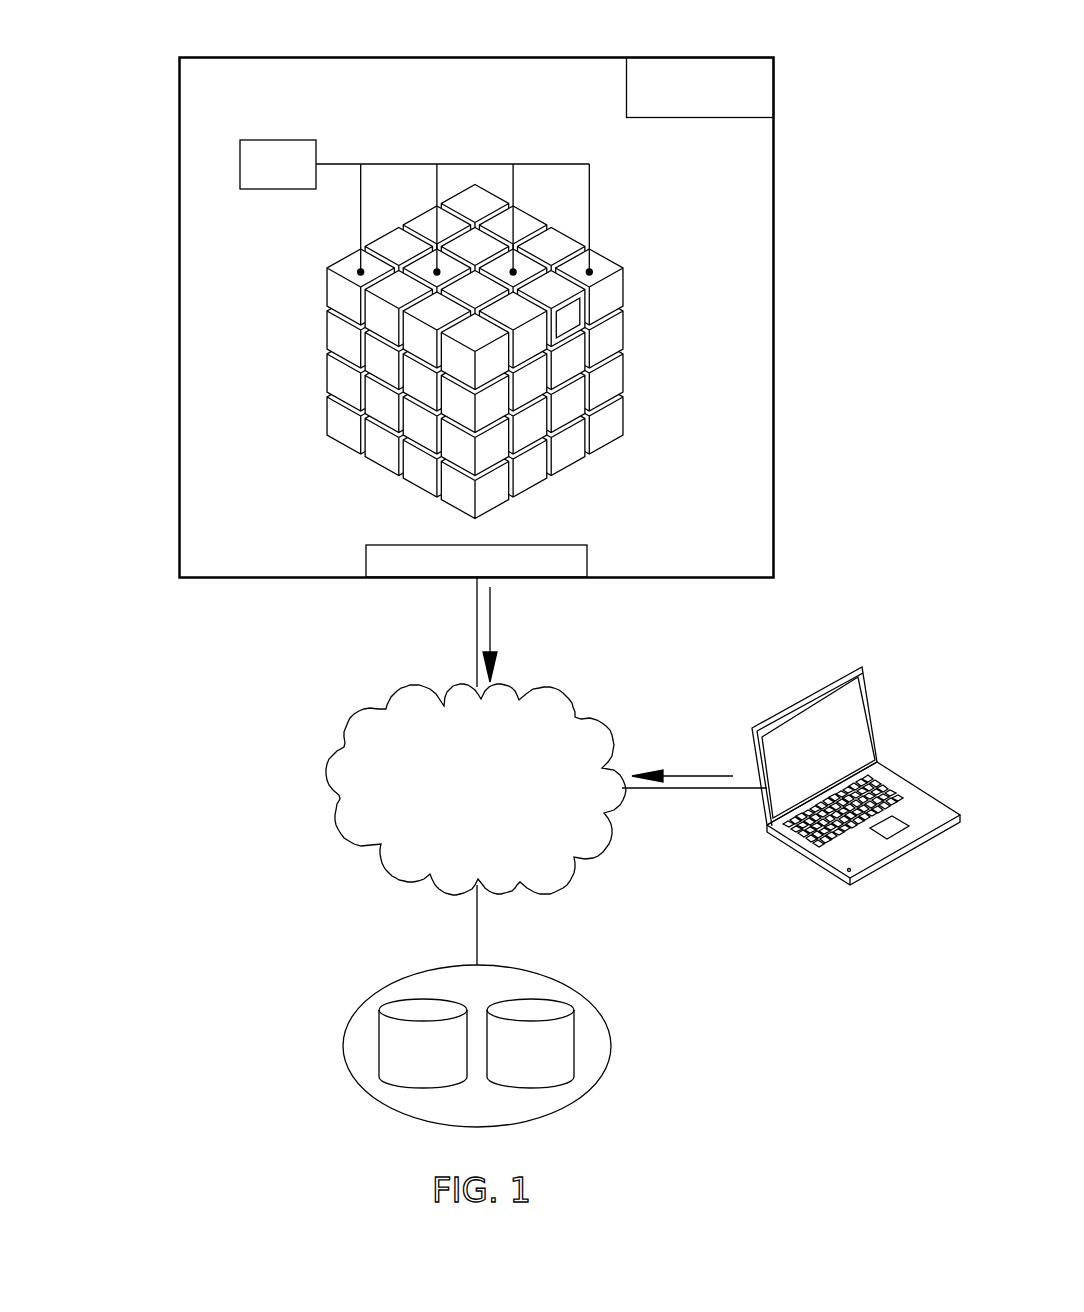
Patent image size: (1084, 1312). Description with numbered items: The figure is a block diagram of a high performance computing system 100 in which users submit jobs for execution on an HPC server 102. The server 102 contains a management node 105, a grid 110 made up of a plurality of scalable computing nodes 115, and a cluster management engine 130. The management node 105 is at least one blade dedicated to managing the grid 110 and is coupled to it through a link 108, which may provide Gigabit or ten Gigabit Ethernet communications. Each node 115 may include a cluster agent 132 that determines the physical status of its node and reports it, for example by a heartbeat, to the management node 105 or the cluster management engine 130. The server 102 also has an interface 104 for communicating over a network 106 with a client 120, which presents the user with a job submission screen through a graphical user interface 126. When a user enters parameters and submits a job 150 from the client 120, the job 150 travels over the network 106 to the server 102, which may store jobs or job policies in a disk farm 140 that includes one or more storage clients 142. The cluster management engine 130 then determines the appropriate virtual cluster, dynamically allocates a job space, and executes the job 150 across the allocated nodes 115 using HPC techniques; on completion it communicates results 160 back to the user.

The HPC system 100 is at (222, 841).
The HPC server 102 is at (176, 250).
The interface 104 is at (400, 570).
The management node 105 is at (277, 140).
The network 106 is at (495, 801).
The link 108 is at (471, 164).
The grid 110 is at (620, 238).
The nodes 115 is at (327, 283).
The client 120 is at (813, 688).
The graphical user interface 126 is at (847, 723).
The cluster management engine 130 is at (676, 78).
The cluster agent 132 is at (583, 313).
The disk farm 140 is at (335, 1043).
The storage clients 142 is at (553, 1065).
The job 150 is at (694, 776).
The results 160 is at (492, 618).